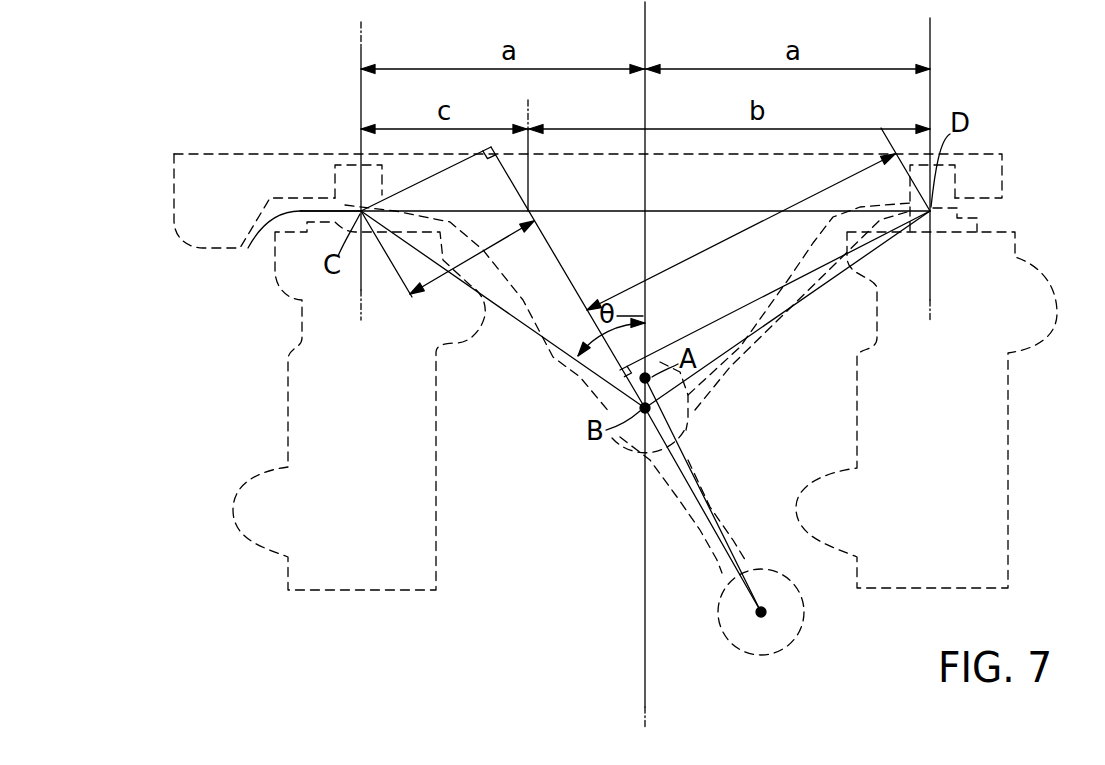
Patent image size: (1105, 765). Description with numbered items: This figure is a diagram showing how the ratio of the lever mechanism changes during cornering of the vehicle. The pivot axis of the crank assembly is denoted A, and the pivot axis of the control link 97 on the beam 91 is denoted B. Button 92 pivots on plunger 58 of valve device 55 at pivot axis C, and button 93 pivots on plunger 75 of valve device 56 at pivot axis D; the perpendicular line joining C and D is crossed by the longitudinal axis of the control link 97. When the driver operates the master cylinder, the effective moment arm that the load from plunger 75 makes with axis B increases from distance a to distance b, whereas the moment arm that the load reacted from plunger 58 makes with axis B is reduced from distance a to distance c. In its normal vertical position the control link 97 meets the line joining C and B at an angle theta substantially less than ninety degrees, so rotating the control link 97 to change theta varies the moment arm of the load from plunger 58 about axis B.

The valve device 55 is at (389, 548).
The valve device 56 is at (954, 548).
The plunger 58 is at (249, 250).
The plunger 75 is at (980, 221).
The beam 91 is at (557, 355).
The button 92 is at (335, 180).
The button 93 is at (955, 188).
The control link 97 is at (714, 559).